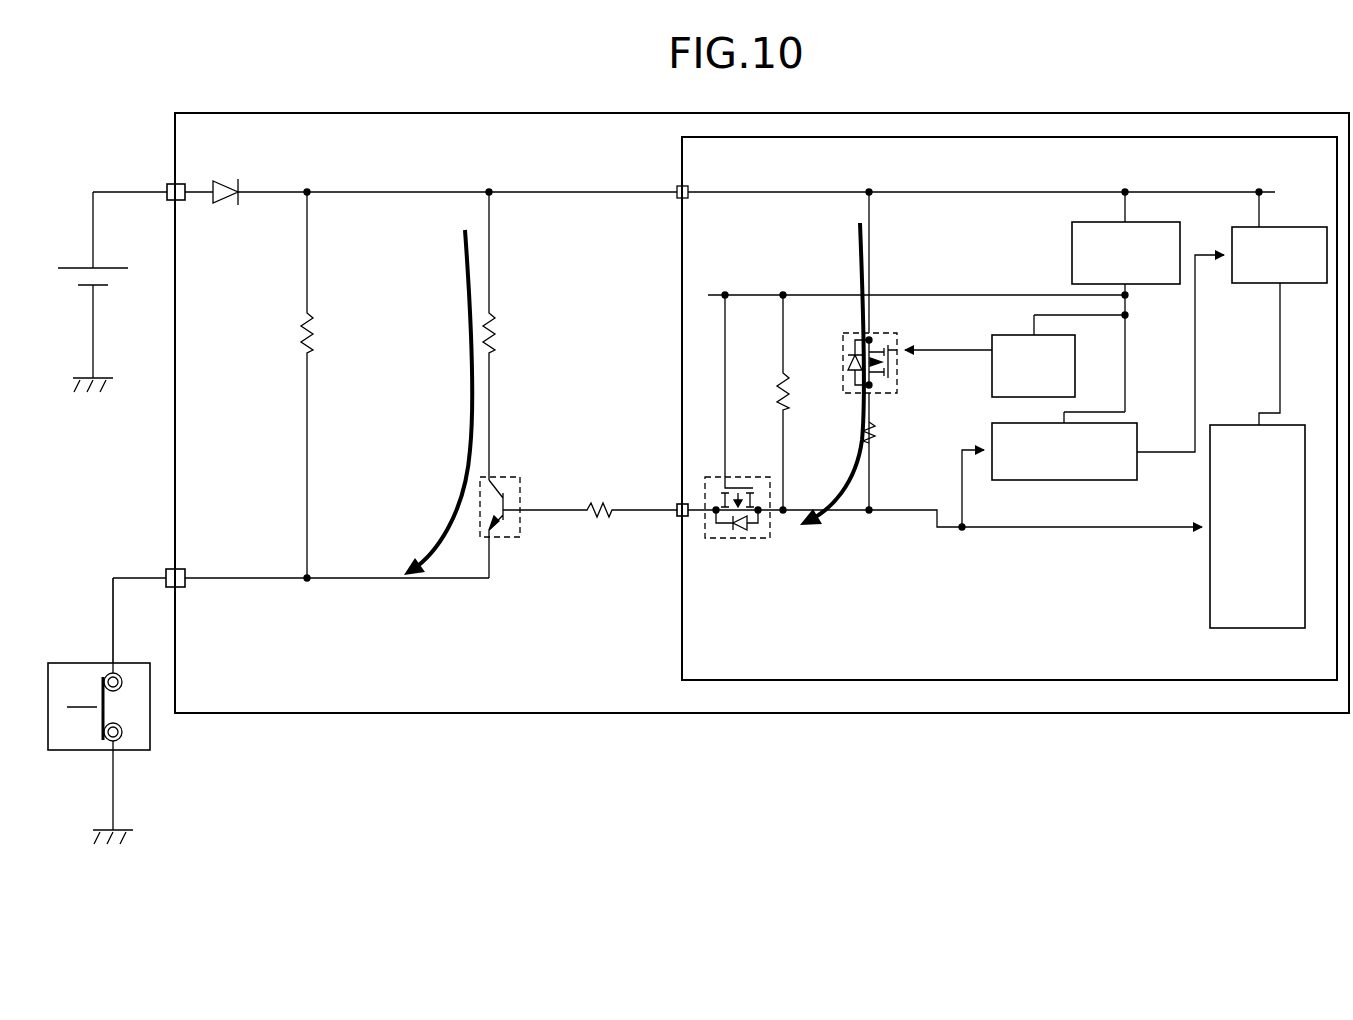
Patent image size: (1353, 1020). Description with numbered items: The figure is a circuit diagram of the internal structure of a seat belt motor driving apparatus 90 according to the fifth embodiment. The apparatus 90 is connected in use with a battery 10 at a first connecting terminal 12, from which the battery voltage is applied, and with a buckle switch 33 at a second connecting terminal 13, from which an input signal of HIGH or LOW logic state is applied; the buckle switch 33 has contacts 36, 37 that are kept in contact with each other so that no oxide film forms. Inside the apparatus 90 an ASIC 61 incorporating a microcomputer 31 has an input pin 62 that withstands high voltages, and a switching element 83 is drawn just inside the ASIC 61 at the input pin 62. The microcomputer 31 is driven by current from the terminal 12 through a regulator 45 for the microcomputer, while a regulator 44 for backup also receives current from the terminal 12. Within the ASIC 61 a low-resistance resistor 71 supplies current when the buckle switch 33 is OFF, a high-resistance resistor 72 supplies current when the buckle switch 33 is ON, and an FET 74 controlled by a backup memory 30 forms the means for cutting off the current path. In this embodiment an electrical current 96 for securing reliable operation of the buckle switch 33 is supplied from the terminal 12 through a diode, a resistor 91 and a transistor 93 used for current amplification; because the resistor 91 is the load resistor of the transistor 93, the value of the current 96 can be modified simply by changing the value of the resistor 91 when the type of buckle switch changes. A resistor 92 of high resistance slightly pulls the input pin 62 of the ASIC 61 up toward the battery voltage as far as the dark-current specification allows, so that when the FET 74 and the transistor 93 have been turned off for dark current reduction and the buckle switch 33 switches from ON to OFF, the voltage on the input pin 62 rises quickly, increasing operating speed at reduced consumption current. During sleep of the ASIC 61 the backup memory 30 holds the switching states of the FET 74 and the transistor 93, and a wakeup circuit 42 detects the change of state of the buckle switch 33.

The battery 10 is at (110, 280).
The first connecting terminal 12 is at (185, 199).
The second connecting terminal 13 is at (185, 587).
The backup memory 30 is at (992, 380).
The microcomputer 31 is at (1210, 578).
The buckle switch 33 is at (70, 752).
The contact 36 is at (118, 674).
The contact 37 is at (103, 672).
The wakeup circuit 42 is at (1137, 470).
The regulator for backup 44 is at (1072, 250).
The regulator for μC 45 is at (1295, 227).
The ASIC 61 is at (682, 632).
The input pin 62 is at (675, 505).
The resistor 71 is at (875, 433).
The resistor 72 is at (790, 410).
The FET 74 is at (843, 350).
The switching element (MOSFET) 83 is at (737, 540).
The motor driving apparatus 90 is at (1148, 713).
The resistor 91 is at (494, 333).
The resistor 92 is at (312, 333).
The transistor 93 is at (518, 537).
The electrical current 96 is at (448, 548).